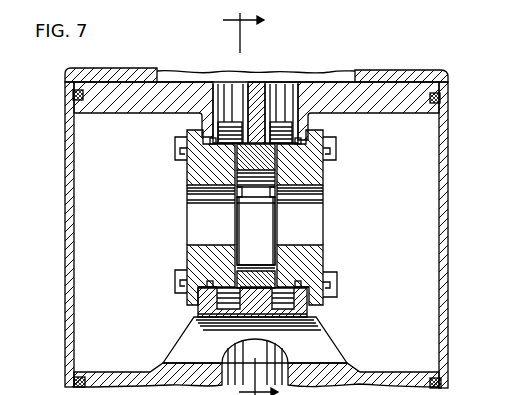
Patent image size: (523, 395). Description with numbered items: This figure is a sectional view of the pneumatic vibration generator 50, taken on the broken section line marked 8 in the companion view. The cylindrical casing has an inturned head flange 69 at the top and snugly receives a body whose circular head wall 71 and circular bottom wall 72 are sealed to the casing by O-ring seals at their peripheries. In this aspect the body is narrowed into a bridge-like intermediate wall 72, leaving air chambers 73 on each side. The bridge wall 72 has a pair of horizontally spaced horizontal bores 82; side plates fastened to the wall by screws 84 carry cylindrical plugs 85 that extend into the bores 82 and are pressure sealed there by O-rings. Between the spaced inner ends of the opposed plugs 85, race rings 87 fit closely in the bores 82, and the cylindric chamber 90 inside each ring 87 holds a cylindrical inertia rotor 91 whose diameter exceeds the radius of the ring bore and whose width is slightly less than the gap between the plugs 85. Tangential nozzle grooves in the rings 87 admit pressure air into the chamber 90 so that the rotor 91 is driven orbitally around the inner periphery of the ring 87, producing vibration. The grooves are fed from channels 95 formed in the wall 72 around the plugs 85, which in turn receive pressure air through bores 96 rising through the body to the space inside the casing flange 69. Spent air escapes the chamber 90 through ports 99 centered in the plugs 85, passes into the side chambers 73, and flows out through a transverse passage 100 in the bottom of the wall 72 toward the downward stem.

The section line 8- 8 is at (245, 203).
The vibration generator 50 is at (451, 318).
The inturned head flange 69 is at (384, 78).
The circular head wall 71 is at (385, 110).
The bridge-like intermediate wall 72 is at (388, 380).
The air chambers 73 is at (80, 222).
The horizontal bores 82 is at (307, 285).
The screws 84 is at (177, 145).
The cylindrical plugs 85 is at (193, 262).
The race rings 87 is at (237, 158).
The cylindric chamber 90 is at (237, 200).
The cylindrical inertia rotor 91 is at (245, 227).
The channels 95 is at (228, 122).
The bores 96 is at (214, 82).
The ports 99 is at (323, 193).
The transverse passage 100 is at (325, 347).